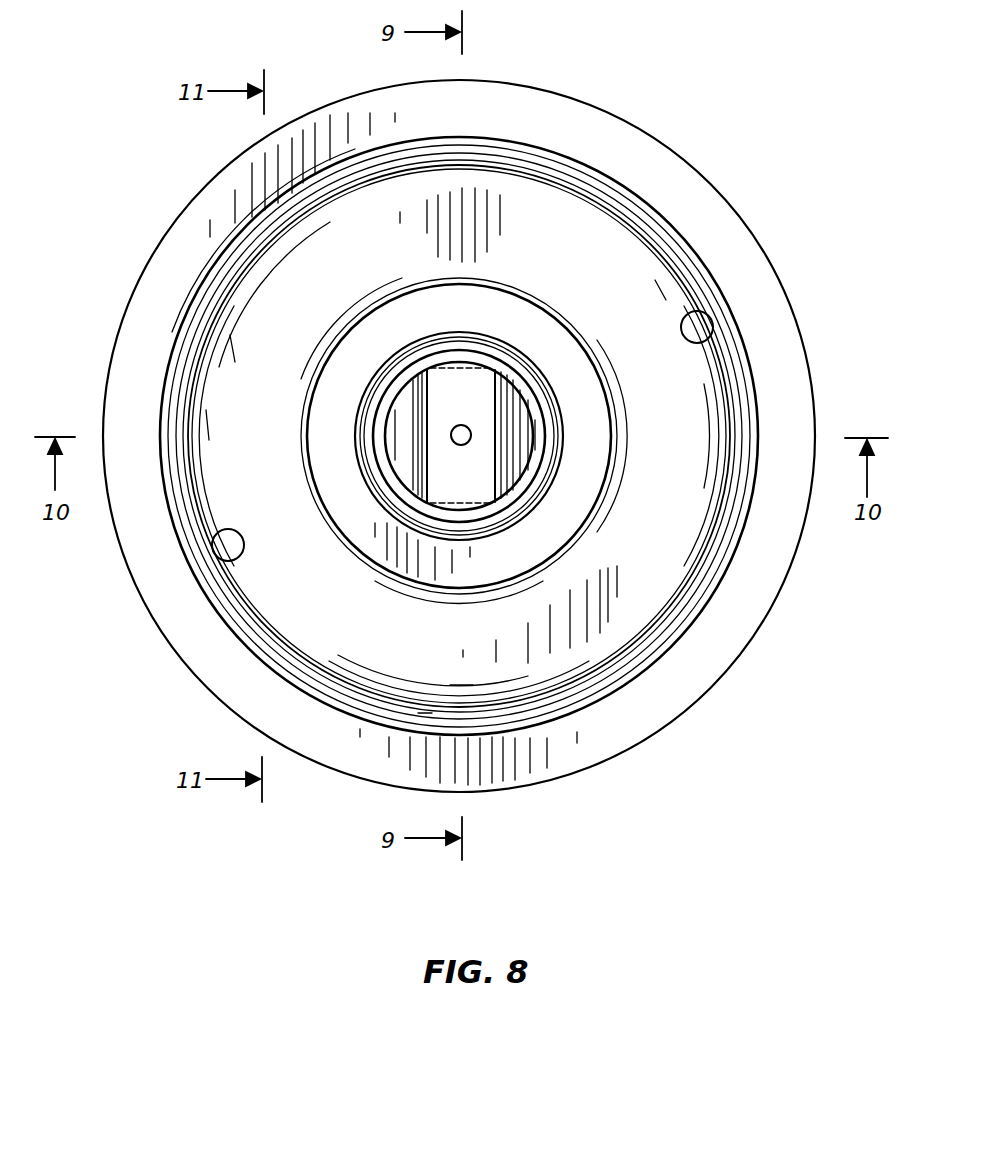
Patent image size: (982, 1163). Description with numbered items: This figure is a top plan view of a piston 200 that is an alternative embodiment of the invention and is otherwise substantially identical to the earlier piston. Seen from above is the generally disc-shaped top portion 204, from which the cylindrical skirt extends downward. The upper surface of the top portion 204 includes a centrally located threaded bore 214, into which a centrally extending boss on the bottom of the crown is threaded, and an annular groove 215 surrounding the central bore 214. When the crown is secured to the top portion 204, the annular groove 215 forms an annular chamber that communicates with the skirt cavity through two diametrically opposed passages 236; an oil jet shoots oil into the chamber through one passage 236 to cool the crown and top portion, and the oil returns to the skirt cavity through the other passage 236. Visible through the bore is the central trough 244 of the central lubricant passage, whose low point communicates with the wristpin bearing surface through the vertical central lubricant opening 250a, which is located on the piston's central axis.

The piston 200 is at (758, 178).
The top portion 204 is at (762, 303).
The annular groove 215 is at (406, 645).
The passages 236 is at (681, 327).
The threaded bore 214 is at (398, 400).
The central trough 244 is at (462, 380).
The central lubricant opening 250a is at (464, 445).